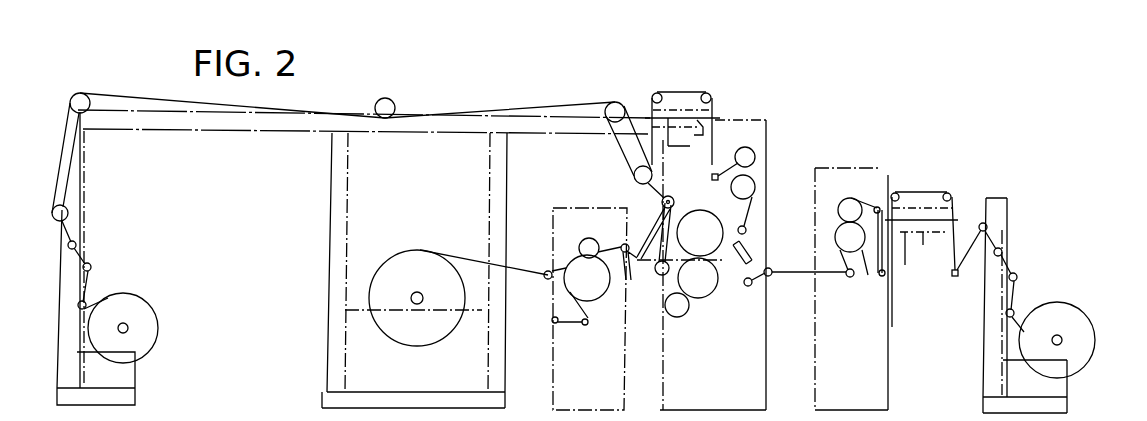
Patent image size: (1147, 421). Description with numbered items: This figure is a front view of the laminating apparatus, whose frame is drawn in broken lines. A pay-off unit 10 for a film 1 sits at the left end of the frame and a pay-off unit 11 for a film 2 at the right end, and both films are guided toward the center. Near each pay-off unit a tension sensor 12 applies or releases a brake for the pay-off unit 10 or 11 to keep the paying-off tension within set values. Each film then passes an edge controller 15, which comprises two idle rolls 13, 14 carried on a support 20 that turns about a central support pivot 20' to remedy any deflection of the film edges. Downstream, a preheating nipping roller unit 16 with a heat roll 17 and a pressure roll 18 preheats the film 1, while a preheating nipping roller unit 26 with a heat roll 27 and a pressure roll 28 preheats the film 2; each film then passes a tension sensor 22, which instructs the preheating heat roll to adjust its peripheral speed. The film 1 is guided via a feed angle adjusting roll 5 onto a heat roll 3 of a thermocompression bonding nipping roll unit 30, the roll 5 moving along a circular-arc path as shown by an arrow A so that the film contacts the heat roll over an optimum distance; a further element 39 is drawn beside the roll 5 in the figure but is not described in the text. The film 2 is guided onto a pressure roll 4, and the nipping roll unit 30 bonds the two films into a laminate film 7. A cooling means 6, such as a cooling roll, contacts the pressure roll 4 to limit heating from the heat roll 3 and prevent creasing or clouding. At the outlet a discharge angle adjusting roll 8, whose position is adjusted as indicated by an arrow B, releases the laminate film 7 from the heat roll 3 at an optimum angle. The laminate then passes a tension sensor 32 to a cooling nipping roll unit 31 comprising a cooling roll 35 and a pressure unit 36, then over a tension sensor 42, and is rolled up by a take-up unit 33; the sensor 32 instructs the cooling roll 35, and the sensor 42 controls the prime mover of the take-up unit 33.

The film 1 is at (505, 108).
The film 2 is at (806, 277).
The heat roll 3 is at (701, 232).
The pressure roll 4 is at (699, 290).
The feed angle adjusting roll 5 is at (756, 249).
The cooling means 6 is at (677, 315).
The laminate film 7 is at (607, 243).
The discharge angle adjusting roll 8 is at (664, 203).
The pay-off unit 10 is at (159, 355).
The pay-off unit 11 is at (1100, 358).
The tension sensor 12 is at (93, 267).
The idle roll 13 is at (652, 95).
The idle roll 14 is at (709, 94).
The edge controller 15 is at (681, 78).
The preheating nipping roller unit 16 is at (757, 141).
The heat roll 17 is at (756, 189).
The pressure roll 18 is at (743, 147).
The support 20 is at (710, 162).
The support pivot 20' is at (636, 152).
The tension sensor 22 is at (748, 231).
The preheating nipping roller unit 26 is at (853, 195).
The heat roll 27 is at (870, 280).
The pressure roll 28 is at (846, 202).
The thermocompression bonding nipping roll unit 30 is at (720, 303).
The cooling nipping roll unit 31 is at (558, 299).
The tension sensor 32 is at (633, 284).
The take-up unit 33 is at (428, 340).
The cooling roll 35 is at (573, 270).
The pressure unit 36 is at (583, 242).
The roller 39 is at (756, 265).
The tension sensor 42 is at (589, 328).
The arrow A is at (736, 306).
The arrow B is at (678, 275).